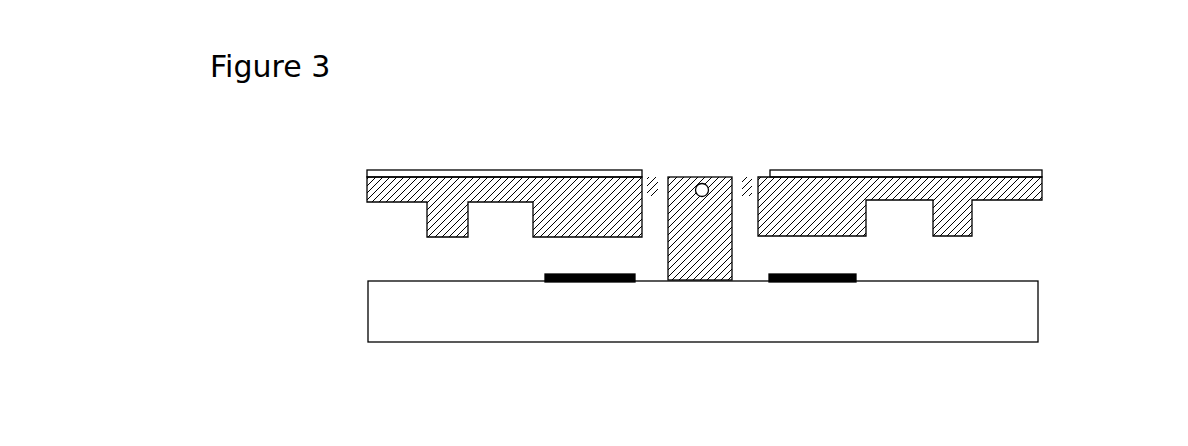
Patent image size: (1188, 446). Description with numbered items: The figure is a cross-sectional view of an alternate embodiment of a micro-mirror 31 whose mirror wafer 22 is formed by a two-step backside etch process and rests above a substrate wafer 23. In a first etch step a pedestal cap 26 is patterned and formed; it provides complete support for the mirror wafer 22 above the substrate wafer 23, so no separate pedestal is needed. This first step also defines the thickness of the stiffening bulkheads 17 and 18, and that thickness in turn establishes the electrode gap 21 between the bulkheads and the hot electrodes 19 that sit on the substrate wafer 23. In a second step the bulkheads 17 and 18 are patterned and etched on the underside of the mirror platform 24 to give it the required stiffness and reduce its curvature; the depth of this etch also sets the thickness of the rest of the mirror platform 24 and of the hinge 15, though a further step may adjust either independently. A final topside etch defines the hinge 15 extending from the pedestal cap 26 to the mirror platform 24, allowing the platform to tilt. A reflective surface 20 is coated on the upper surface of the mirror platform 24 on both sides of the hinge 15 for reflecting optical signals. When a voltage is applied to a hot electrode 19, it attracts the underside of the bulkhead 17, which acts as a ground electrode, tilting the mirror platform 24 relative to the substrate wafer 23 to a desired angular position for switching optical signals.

The hinge 15 is at (710, 177).
The stiffening bulkhead 17 is at (545, 219).
The stiffening bulkhead 18 is at (427, 216).
The hot electrode 19 is at (545, 275).
The reflective surface 20 is at (486, 170).
The electrode gap 21 is at (700, 262).
The mirror wafer 22 is at (352, 206).
The substrate wafer 23 is at (356, 305).
The mirror platform 24 is at (1042, 190).
The pedestal cap 26 is at (682, 177).
The micro-mirror 31 is at (893, 117).